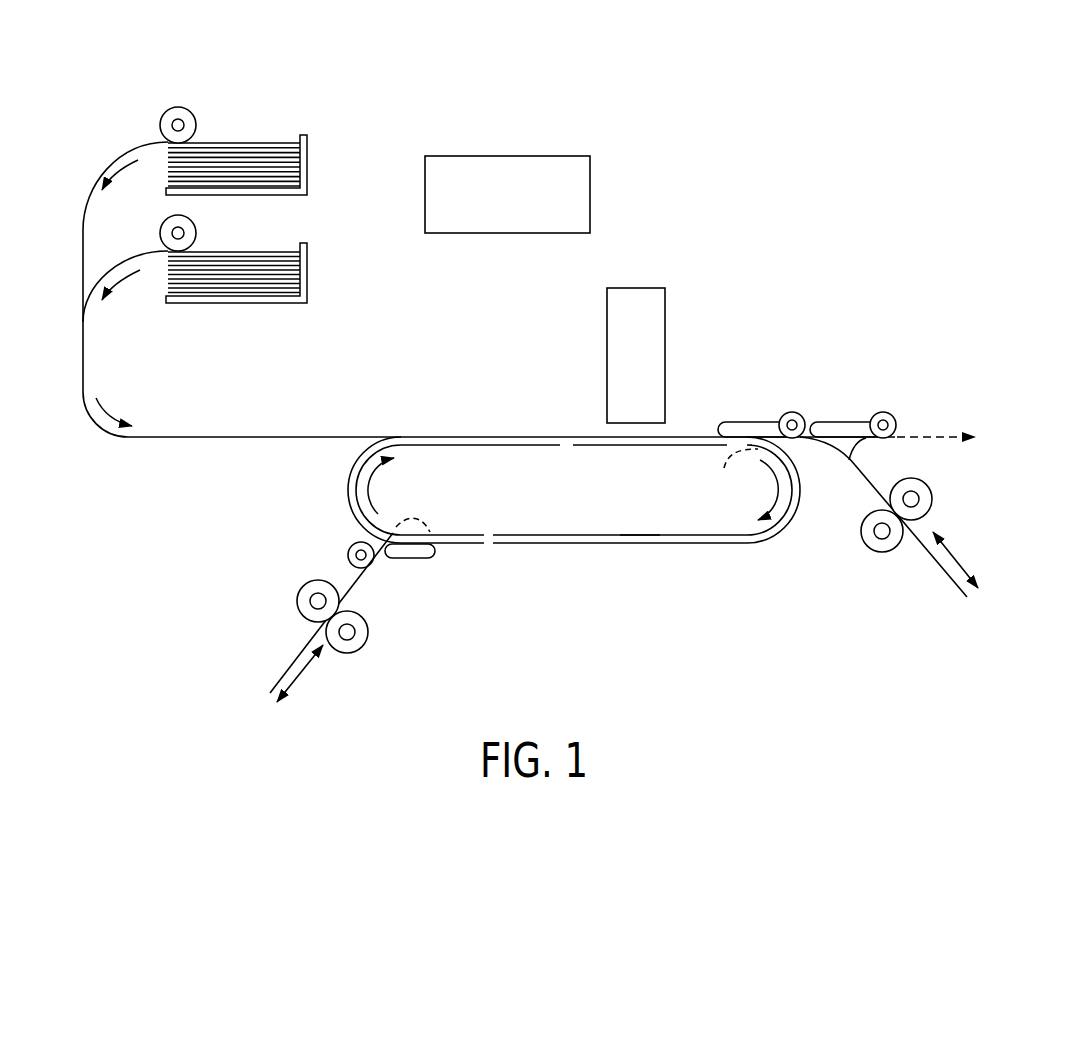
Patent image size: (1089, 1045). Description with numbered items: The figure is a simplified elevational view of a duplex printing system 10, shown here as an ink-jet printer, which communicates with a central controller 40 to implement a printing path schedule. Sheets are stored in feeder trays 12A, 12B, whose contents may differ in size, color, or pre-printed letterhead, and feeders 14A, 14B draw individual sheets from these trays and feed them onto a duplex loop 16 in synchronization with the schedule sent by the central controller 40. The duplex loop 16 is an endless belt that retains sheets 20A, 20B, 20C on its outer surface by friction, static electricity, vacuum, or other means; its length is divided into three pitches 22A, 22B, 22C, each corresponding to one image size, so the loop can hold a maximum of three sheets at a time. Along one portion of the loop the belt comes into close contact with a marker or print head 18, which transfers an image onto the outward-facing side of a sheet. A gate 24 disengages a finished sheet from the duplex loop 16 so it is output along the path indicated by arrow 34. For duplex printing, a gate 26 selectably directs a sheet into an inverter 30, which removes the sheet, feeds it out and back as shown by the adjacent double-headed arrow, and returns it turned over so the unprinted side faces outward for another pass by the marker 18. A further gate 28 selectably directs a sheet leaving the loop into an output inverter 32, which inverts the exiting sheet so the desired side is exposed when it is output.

The duplex printing system 10 is at (772, 191).
The feeder tray 12A is at (287, 140).
The feeder tray 12B is at (287, 250).
The feeder 14A is at (197, 123).
The feeder 14B is at (197, 231).
The duplex loop 16 is at (565, 435).
The marker or print head 18 is at (665, 343).
The sheet 20A is at (696, 436).
The sheet 20B is at (640, 546).
The sheet 20C is at (457, 546).
The pitch 22A is at (640, 447).
The pitch 22B is at (637, 533).
The pitch 22C is at (443, 536).
The gate 24 is at (793, 411).
The gate 26 is at (352, 550).
The gate 28 is at (884, 411).
The inverter 30 is at (275, 594).
The output inverter 32 is at (952, 499).
The arrow 34 is at (930, 437).
The central controller 40 is at (590, 197).